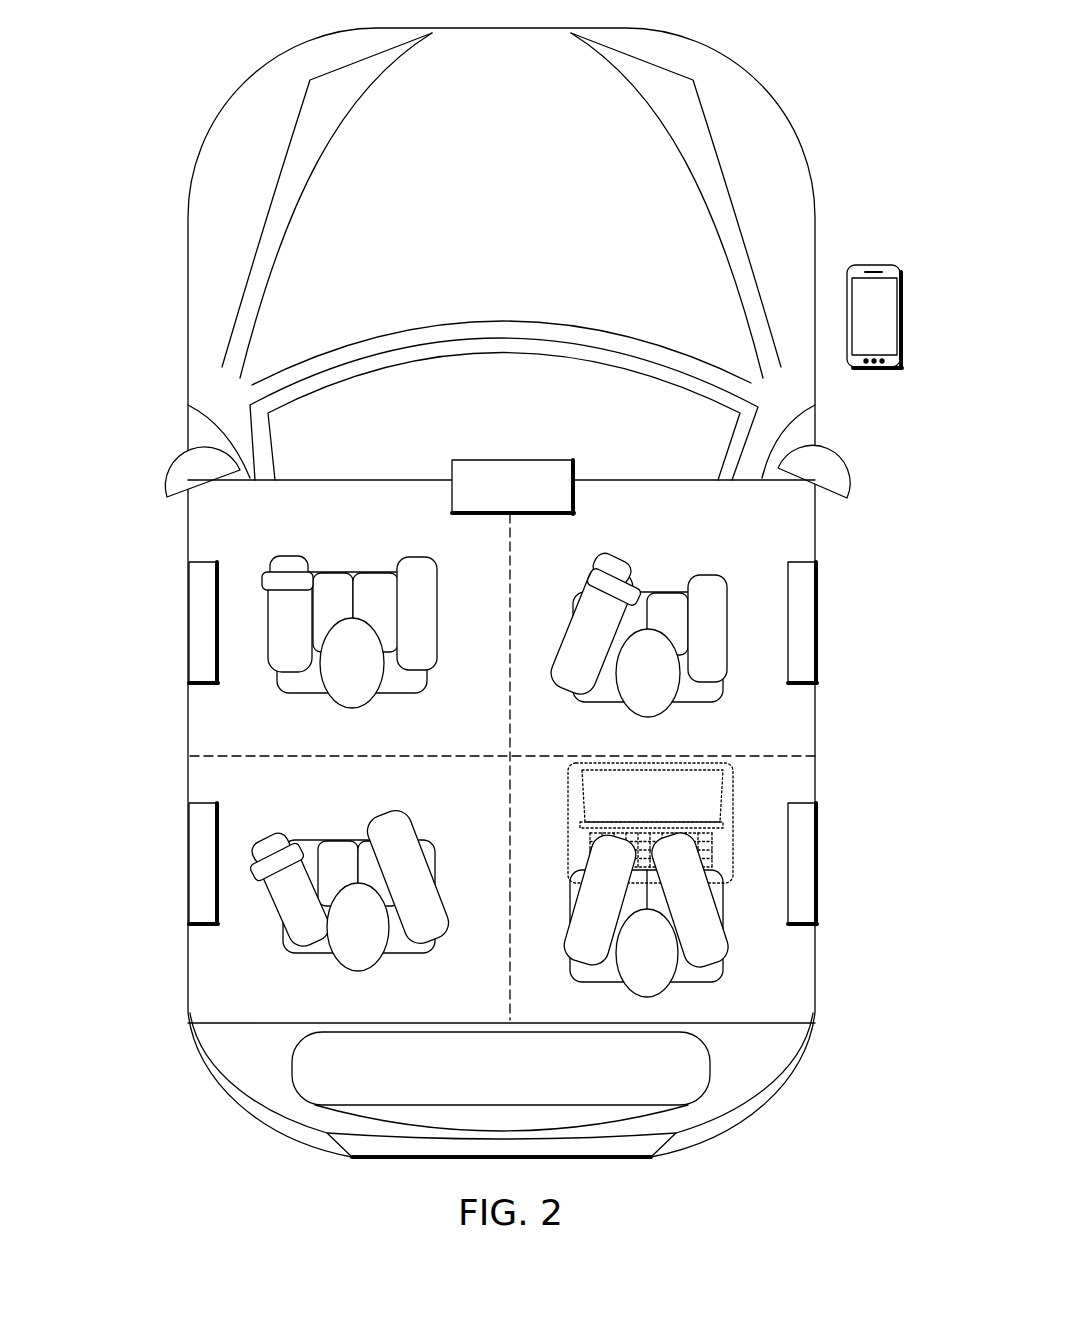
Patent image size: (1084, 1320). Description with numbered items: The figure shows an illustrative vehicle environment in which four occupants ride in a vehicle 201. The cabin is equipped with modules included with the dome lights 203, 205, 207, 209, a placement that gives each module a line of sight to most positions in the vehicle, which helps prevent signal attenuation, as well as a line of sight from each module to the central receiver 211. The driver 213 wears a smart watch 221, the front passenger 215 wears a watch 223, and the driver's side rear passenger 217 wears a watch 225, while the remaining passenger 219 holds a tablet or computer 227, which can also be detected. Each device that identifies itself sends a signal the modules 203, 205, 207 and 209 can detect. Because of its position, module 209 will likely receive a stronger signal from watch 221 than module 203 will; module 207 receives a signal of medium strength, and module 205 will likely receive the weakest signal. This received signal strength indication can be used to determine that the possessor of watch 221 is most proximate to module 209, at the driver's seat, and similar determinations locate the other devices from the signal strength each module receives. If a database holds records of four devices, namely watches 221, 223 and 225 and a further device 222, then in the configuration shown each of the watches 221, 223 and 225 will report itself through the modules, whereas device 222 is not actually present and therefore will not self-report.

The vehicle 201 is at (616, 432).
The module 203 is at (820, 618).
The module 205 is at (820, 858).
The module 207 is at (190, 852).
The module 209 is at (190, 614).
The central receiver 211 is at (505, 460).
The driver 213 is at (323, 628).
The front passenger 215 is at (636, 625).
The driver's side rear passenger 217 is at (351, 893).
The passenger 219 is at (651, 895).
The smart watch 221 is at (277, 578).
The device 222 is at (872, 265).
The smart watch 223 is at (612, 585).
The smart watch 225 is at (300, 850).
The tablet or computer 227 is at (587, 782).